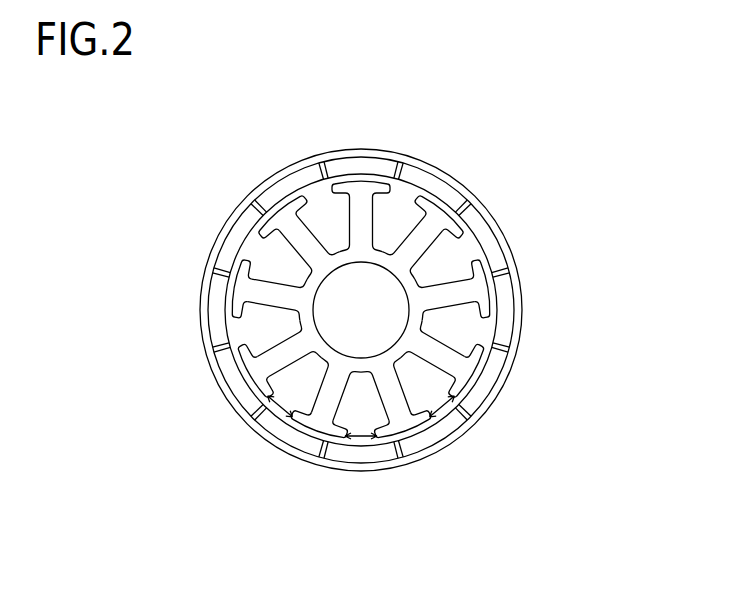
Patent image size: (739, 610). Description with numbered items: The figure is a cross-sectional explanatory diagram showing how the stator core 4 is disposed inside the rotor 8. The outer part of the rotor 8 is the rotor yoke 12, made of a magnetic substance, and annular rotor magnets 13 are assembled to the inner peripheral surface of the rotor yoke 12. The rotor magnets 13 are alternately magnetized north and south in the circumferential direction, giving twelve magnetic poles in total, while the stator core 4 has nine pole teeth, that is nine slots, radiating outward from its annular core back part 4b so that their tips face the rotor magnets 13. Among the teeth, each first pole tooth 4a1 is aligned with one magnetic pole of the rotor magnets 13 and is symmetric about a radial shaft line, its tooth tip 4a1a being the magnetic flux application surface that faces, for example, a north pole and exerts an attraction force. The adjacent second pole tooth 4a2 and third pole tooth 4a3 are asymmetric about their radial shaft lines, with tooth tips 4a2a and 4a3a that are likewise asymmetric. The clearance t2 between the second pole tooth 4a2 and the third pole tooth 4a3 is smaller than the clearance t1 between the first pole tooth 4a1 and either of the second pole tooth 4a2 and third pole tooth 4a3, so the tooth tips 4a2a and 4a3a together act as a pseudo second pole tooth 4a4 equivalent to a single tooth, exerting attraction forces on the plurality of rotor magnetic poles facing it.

The stator core 4 is at (335, 237).
The first pole tooth 4a1 is at (360, 205).
The tooth tip 4a1a is at (372, 182).
The second pole tooth 4a2 is at (437, 217).
The tooth tip 4a2a is at (462, 221).
The third pole tooth 4a3 is at (297, 224).
The tooth tip 4a3a is at (497, 297).
The pseudo second pole tooth 4a4 is at (477, 503).
The annular part 4b is at (298, 320).
The rotor 8 is at (210, 242).
The rotor yoke 12 is at (518, 318).
The rotor magnets 13 is at (503, 357).
The clearance t1 is at (273, 411).
The clearance t2 is at (362, 443).